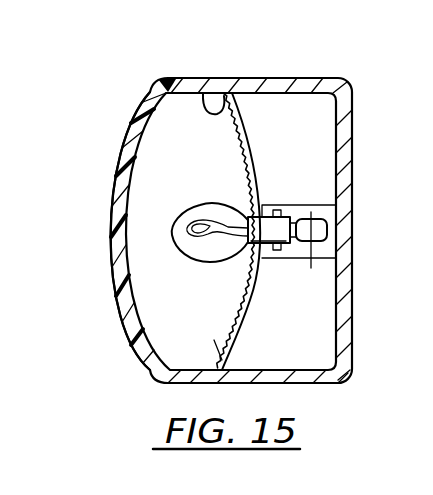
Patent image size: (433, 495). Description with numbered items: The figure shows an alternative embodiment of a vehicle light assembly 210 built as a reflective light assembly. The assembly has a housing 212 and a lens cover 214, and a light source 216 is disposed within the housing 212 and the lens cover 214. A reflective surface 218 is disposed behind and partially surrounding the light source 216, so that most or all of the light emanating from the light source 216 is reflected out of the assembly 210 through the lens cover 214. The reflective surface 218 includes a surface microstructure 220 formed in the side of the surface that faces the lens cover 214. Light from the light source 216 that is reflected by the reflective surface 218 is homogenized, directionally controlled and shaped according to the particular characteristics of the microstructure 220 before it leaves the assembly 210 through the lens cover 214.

The vehicle light assembly 210 is at (413, 12).
The housing 212 is at (352, 291).
The lens cover 214 is at (113, 281).
The light source 216 is at (172, 223).
The reflective surface 218 is at (204, 95).
The surface microstructure 220 is at (238, 326).